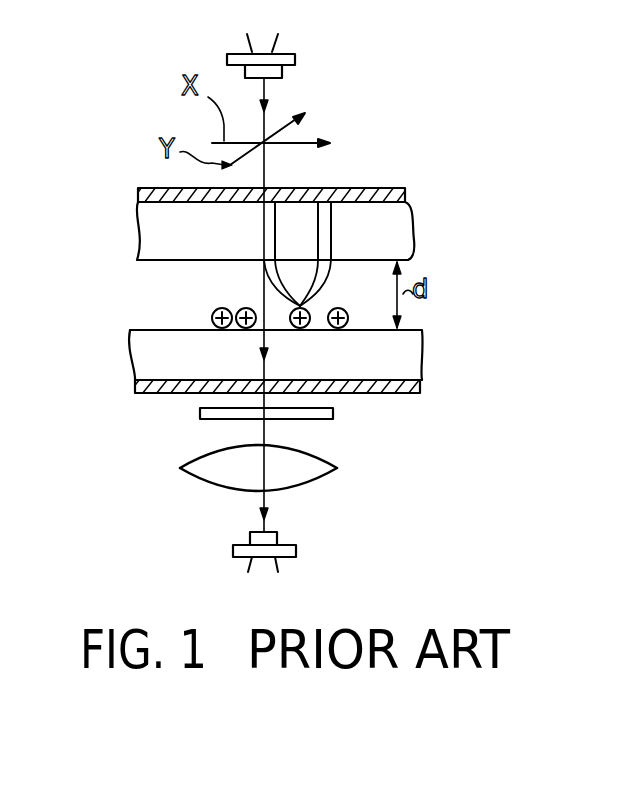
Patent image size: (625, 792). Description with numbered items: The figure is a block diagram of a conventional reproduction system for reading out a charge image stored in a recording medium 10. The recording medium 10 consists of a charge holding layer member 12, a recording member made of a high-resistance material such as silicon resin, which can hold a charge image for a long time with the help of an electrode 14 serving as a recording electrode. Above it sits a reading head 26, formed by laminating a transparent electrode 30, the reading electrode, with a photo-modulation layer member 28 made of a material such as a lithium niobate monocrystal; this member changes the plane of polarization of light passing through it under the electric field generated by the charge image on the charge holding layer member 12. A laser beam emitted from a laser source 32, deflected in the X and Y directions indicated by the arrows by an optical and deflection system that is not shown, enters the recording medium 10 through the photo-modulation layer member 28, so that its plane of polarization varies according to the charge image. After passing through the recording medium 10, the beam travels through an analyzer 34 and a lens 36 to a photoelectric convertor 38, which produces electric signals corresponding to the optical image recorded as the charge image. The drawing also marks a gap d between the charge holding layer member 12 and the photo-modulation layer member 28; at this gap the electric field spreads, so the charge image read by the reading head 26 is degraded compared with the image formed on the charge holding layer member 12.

The recording medium 10 is at (250, 375).
The charge holding layer member 12 is at (405, 362).
The electrode 14 is at (182, 388).
The reading head 26 is at (247, 206).
The photo-modulation layer member 28 is at (397, 232).
The transparent electrode 30 is at (368, 186).
The laser source 32 is at (292, 72).
The analyzer 34 is at (335, 412).
The lens 36 is at (335, 466).
The photoelectric convertor 38 is at (287, 538).